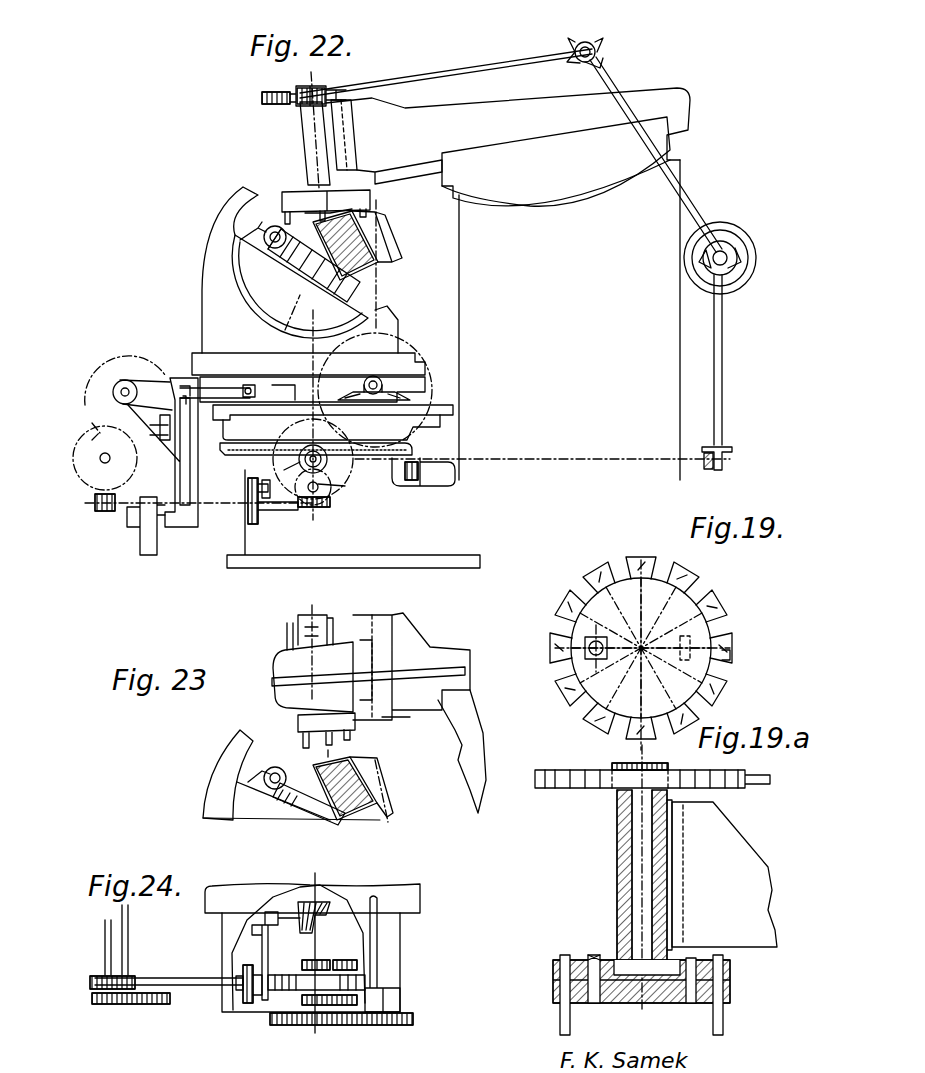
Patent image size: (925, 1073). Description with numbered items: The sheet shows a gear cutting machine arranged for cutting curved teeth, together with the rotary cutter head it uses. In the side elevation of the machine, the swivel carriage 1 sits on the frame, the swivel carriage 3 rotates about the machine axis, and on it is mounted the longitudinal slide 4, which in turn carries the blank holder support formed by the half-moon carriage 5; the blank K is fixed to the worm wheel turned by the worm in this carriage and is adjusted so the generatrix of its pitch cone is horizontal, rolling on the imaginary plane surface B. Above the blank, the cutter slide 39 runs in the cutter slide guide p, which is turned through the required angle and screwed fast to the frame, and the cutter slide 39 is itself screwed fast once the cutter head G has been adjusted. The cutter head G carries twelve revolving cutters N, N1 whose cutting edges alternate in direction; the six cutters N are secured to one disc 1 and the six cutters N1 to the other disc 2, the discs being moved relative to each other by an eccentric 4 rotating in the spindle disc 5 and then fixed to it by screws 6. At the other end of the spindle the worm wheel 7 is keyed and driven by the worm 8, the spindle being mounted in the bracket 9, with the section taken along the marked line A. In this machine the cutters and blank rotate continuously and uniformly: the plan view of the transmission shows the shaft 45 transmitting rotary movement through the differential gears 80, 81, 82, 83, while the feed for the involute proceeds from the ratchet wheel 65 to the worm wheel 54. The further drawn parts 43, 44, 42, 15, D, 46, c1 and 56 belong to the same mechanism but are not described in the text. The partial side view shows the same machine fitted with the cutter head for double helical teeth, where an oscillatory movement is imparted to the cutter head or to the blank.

In FIG. 22, the cutter slide 39 is at (508, 284).
In FIG. 22, the cutter slide guide p is at (556, 161).
In FIG. 22, the cutter head G is at (288, 186).
In FIG. 19A, the cutter head G is at (593, 895).
In FIG. 22, the blank K is at (355, 265).
In FIG. 22, the half-moon carriage 5 is at (300, 280).
In FIG. 19A, the half-moon carriage 5 is at (640, 832).
In FIG. 22, the longitudinal slide 4 is at (312, 317).
In FIG. 19, the longitudinal slide 4 is at (583, 655).
In FIG. 19A, the longitudinal slide 4 is at (594, 1003).
In FIG. 22, the swivel carriage 3 is at (302, 389).
In FIG. 22, the swivel carriage 1 is at (333, 422).
In FIG. 19, the swivel carriage 1 is at (641, 653).
In FIG. 19A, the swivel carriage 1 is at (632, 1005).
In FIG. 22, the bar 43 is at (310, 460).
In FIG. 22, the gear 44 is at (288, 470).
In FIG. 23, the gear 44 is at (326, 673).
In FIG. 22, the differential gear 82 is at (313, 415).
In FIG. 24, the differential gear 82 is at (340, 1005).
In FIG. 22, the worm wheel 54 is at (342, 485).
In FIG. 24, the worm wheel 54 is at (365, 990).
In FIG. 22, the differential gear 83 is at (325, 490).
In FIG. 24, the differential gear 83 is at (312, 1005).
In FIG. 22, the hanger 42 is at (412, 480).
In FIG. 22, the ratchet wheel 65 is at (258, 520).
In FIG. 24, the ratchet wheel 65 is at (242, 1003).
In FIG. 22, the bracket 15 is at (141, 441).
In FIG. 22, the shaft D is at (192, 489).
In FIG. 23, the block 46 is at (419, 712).
In FIG. 23, the cam c1 is at (290, 663).
In FIG. 24, the shaft 45 is at (322, 922).
In FIG. 24, the bracket 56 is at (268, 935).
In FIG. 24, the differential gear 80 is at (318, 960).
In FIG. 24, the differential gear 81 is at (342, 960).
In FIG. 19, the screws 6 is at (690, 648).
In FIG. 19A, the screws 6 is at (691, 958).
In FIG. 19, the axis A is at (647, 552).
In FIG. 19, the plane surface B is at (690, 733).
In FIG. 19, the cutters N is at (580, 610).
In FIG. 19A, the cutters N is at (723, 1018).
In FIG. 19, the cutters N1 is at (610, 585).
In FIG. 19A, the cutters N1 is at (560, 1023).
In FIG. 19A, the worm wheel 7 is at (682, 775).
In FIG. 19A, the worm 8 is at (640, 767).
In FIG. 19A, the bracket 9 is at (620, 843).
In FIG. 19A, the disc 2 is at (705, 965).